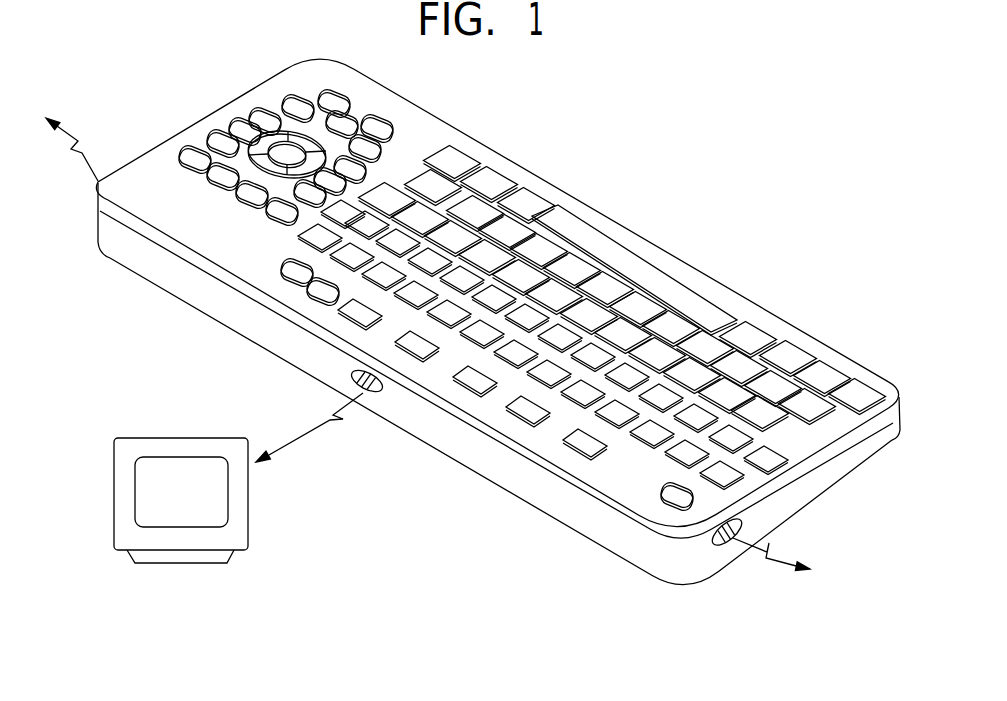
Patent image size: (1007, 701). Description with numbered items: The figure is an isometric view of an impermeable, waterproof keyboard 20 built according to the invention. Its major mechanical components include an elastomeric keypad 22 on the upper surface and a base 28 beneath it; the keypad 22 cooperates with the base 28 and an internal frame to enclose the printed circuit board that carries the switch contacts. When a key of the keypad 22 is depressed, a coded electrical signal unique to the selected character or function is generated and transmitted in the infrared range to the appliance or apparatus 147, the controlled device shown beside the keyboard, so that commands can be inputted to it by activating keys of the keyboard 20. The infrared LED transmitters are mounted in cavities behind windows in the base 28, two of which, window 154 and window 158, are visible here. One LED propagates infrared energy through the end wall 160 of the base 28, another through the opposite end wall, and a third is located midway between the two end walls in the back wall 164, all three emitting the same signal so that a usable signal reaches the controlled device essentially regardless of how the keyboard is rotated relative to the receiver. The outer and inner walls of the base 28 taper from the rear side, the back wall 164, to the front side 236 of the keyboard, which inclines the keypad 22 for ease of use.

The keyboard 20 is at (672, 232).
The elastomeric keypad 22 is at (98, 181).
The base 28 is at (567, 540).
The appliance or apparatus 147 is at (162, 430).
The window 154 is at (722, 540).
The window 158 is at (355, 375).
The end wall 160 is at (803, 505).
The back wall 164 is at (162, 278).
The front side 236 is at (533, 168).